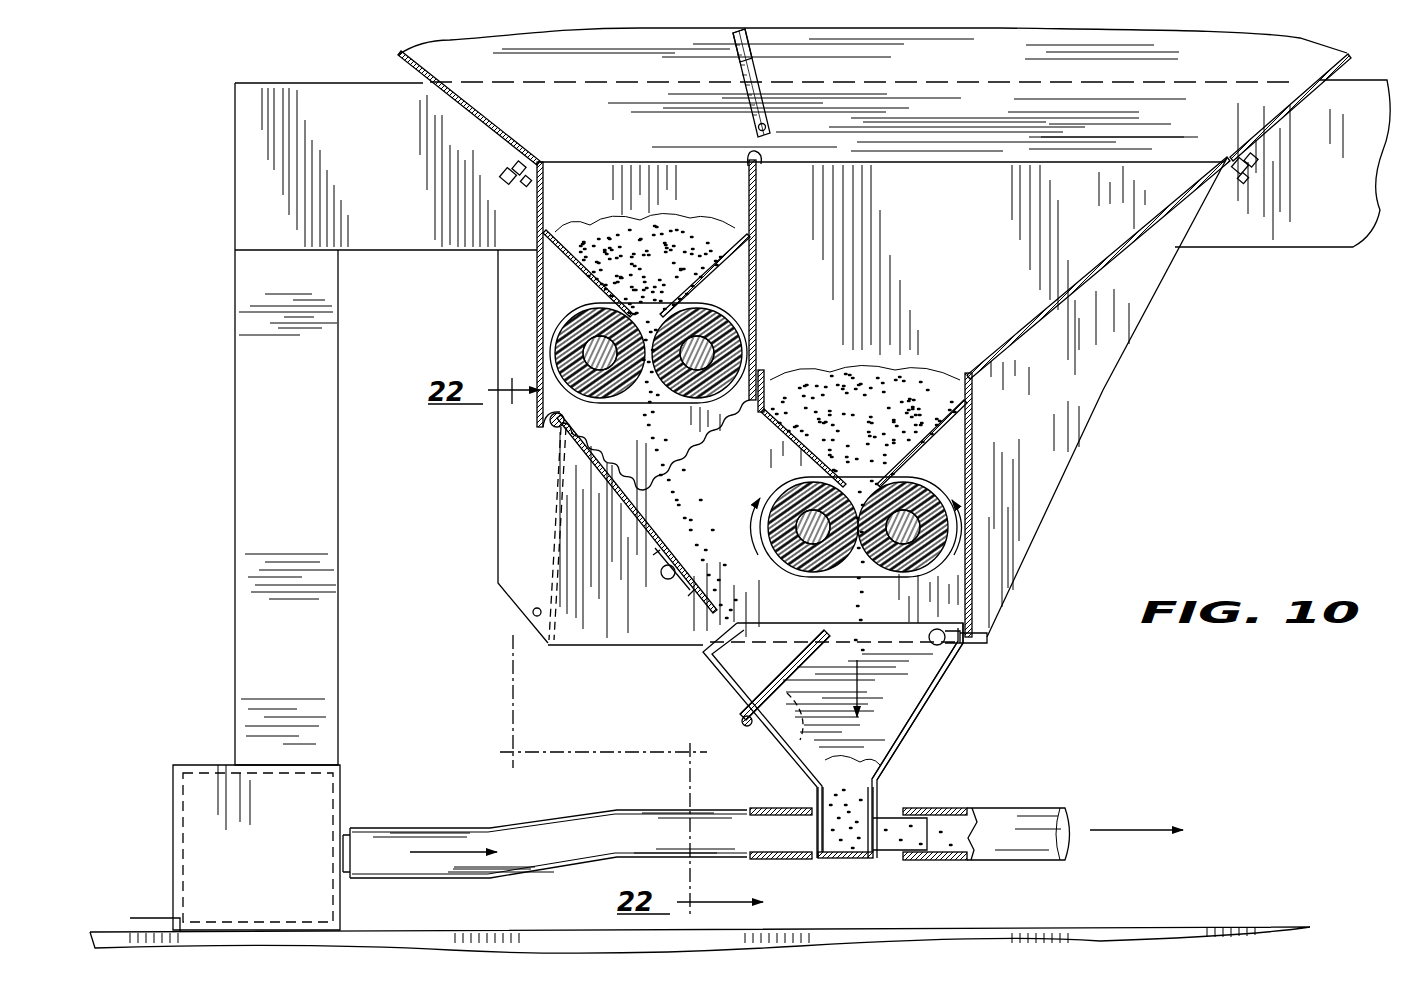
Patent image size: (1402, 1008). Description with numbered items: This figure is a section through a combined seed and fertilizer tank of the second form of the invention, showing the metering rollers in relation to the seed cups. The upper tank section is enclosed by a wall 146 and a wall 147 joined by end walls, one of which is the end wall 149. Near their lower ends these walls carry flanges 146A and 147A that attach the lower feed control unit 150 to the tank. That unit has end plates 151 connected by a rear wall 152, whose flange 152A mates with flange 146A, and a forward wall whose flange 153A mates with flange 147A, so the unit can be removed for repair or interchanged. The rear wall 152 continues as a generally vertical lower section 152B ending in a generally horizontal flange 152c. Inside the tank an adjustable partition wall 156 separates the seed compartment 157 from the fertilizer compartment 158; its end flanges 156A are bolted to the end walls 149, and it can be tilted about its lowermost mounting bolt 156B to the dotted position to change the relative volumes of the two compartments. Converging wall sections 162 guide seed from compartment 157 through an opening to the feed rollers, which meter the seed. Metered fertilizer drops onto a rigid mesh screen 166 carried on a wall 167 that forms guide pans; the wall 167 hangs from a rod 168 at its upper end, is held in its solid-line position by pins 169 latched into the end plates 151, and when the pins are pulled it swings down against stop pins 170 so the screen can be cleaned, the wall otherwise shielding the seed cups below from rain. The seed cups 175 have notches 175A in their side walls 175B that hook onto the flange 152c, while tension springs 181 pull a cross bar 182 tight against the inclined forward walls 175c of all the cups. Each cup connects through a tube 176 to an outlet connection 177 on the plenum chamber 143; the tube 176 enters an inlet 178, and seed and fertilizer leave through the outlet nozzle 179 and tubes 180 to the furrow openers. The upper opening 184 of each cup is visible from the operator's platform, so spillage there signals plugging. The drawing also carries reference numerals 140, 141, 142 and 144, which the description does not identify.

The material dispensing apparatus 140 is at (358, 43).
The support column 141 is at (270, 537).
The floor 142 is at (420, 932).
The plenum chamber 143 is at (215, 797).
The direction arrow 144 is at (1220, 193).
The tank wall 146 is at (1282, 112).
The flange 146A is at (1260, 170).
The tank wall 147 is at (410, 60).
The flange 147A is at (517, 157).
The end wall 149 is at (968, 140).
The lower feed control unit 150 is at (1083, 455).
The end plates 151 is at (1013, 530).
The rear wall 152 is at (1098, 262).
The flange 152A is at (1247, 182).
The vertical lower section 152B is at (974, 443).
The horizontal flange 152c is at (985, 640).
The flange 153A is at (544, 191).
The adjustable partition wall 156 is at (747, 123).
The end flanges 156A is at (758, 57).
The mounting screw or bolt 156B is at (767, 123).
The seed compartment 157 is at (1268, 60).
The fertilizer compartment 158 is at (480, 65).
The converging wall sections 162 is at (812, 459).
The mesh screen 166 is at (580, 447).
The wall 167 is at (620, 487).
The rod 168 is at (550, 433).
The pins 169 is at (656, 576).
The stop pins 170 is at (533, 612).
The seed cups 175 is at (720, 677).
The notches 175A is at (955, 650).
The side walls 175B is at (900, 712).
The inclined forward walls 175c is at (690, 792).
The tube 176 is at (492, 828).
The outlet connection 177 is at (350, 832).
The inlet 178 is at (810, 858).
The outlet nozzle 179 is at (893, 852).
The tubes 180 is at (1017, 820).
The tension springs 181 is at (781, 774).
The cross bar 182 is at (740, 722).
The upper opening 184 is at (698, 647).